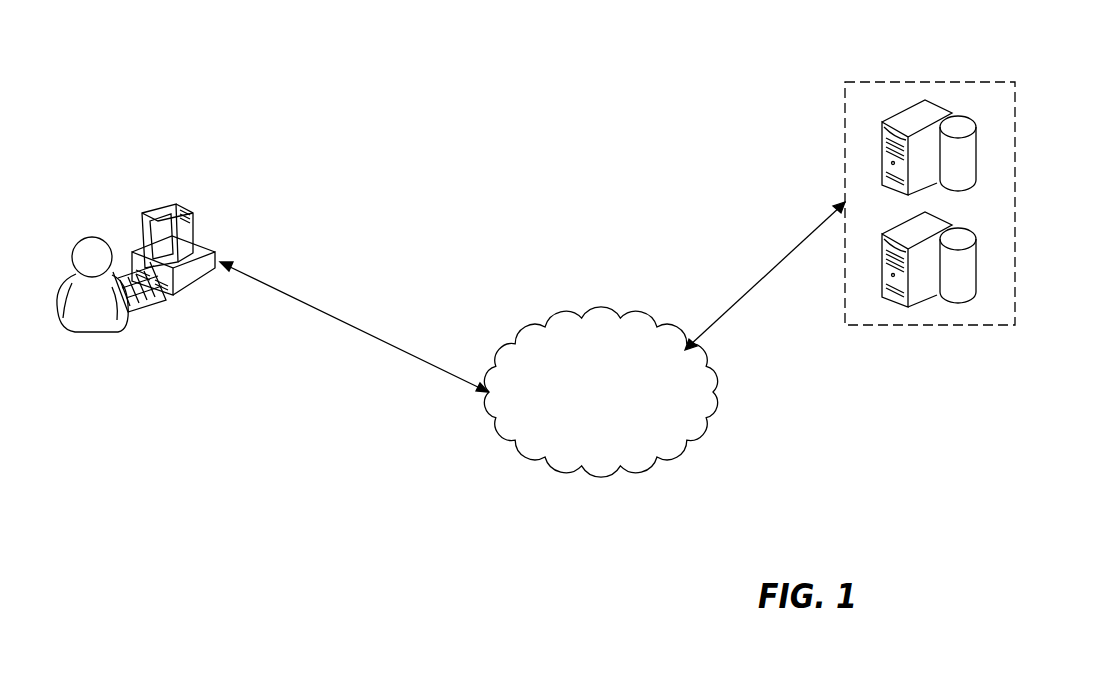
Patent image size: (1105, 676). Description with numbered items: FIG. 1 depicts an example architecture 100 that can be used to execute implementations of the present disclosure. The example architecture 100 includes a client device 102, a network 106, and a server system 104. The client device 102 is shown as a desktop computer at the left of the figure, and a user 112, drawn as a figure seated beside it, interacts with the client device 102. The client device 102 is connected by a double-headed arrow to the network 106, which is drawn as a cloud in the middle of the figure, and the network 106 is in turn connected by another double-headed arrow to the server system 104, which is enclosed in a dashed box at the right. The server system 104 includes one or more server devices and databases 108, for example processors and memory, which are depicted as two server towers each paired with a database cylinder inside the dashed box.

The example architecture 100 is at (452, 80).
The client device 102 is at (138, 215).
The server system 104 is at (1015, 203).
The network 106 is at (607, 317).
The server devices and databases 108 is at (882, 155).
The user 112 is at (93, 337).